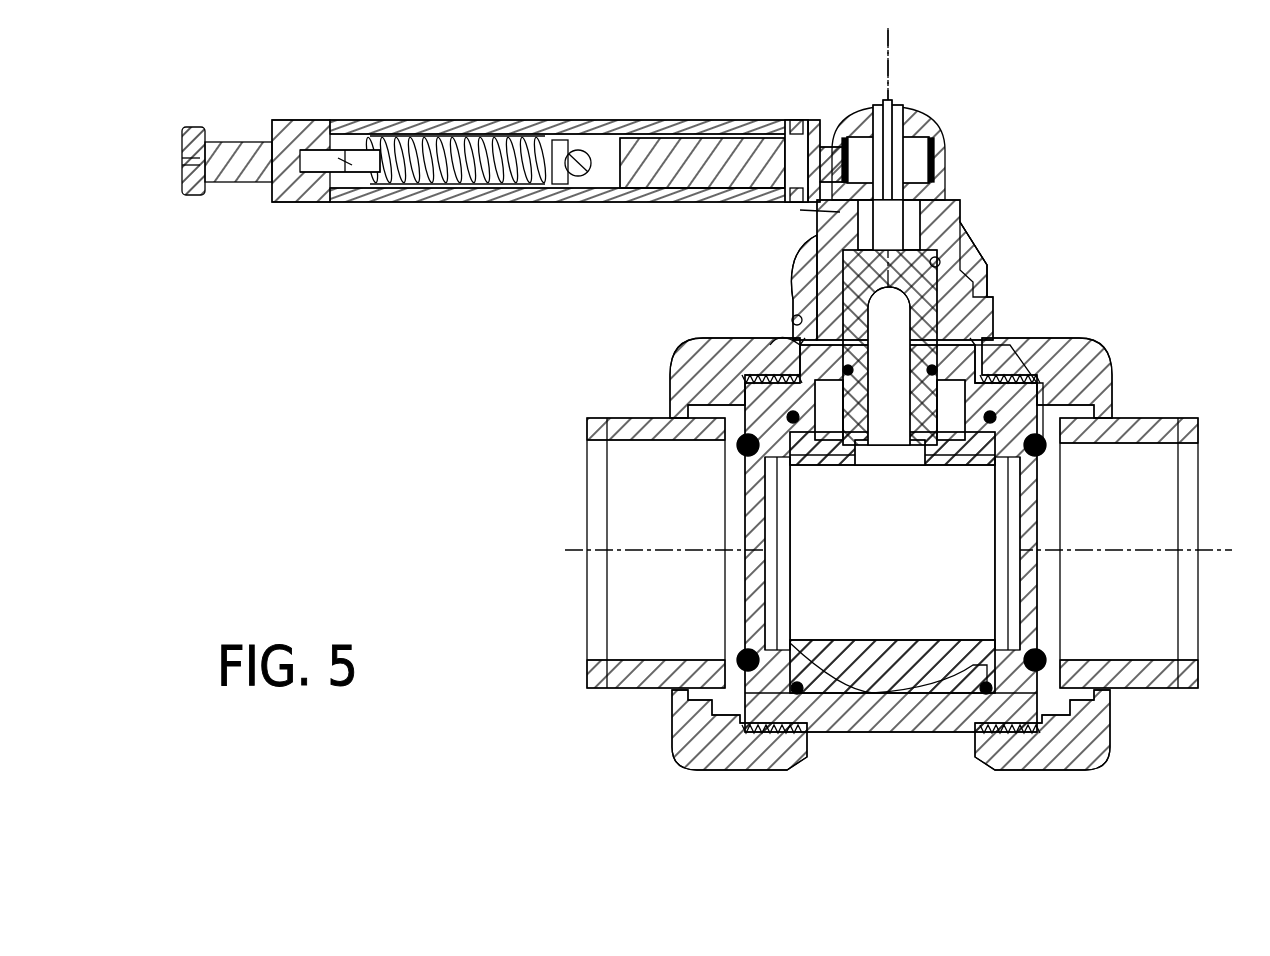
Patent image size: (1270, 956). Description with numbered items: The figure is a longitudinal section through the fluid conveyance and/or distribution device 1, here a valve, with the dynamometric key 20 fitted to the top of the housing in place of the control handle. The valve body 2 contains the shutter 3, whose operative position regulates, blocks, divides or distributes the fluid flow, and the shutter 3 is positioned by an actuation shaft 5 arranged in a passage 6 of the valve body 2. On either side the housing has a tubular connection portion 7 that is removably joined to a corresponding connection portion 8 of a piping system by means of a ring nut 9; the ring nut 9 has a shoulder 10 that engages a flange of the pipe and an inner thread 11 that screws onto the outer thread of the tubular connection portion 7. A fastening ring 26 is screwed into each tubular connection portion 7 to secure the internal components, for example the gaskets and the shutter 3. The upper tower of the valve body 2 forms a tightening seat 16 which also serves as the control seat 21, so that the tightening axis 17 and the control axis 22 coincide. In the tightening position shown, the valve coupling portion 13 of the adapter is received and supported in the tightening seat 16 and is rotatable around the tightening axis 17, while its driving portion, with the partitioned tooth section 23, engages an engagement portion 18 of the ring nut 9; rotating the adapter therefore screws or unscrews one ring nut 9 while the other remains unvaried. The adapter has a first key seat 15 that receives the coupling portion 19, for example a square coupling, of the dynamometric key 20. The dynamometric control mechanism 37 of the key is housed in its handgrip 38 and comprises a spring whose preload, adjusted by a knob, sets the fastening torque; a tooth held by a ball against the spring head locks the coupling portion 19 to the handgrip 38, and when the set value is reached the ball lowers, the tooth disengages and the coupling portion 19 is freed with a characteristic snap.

The fluid conveyance and/or distribution device 1 is at (1130, 260).
The valve body 2 is at (935, 732).
The shutter 3 is at (882, 650).
The actuation shaft 5 is at (905, 442).
The passage 6 is at (838, 462).
The tubular connection portion 7 is at (757, 770).
The connection portion 8 is at (1143, 428).
The ring nut 9 is at (1107, 362).
The shoulder 10 is at (1115, 388).
The inner thread 11 is at (1040, 345).
The valve coupling portion 13 is at (935, 262).
The first key seat 15 is at (950, 197).
The tightening seat 16 is at (840, 280).
The tightening axis 17 is at (893, 88).
The engagement portion 18 is at (1027, 362).
The coupling portion 19 is at (845, 212).
The dynamometric key 20 is at (514, 118).
The control seat 21 is at (933, 280).
The control axis 22 is at (882, 46).
The partitioned tooth section 23 is at (1010, 297).
The fastening ring 26 is at (785, 668).
The dynamometric control mechanism 37 is at (462, 128).
The handgrip 38 is at (585, 130).